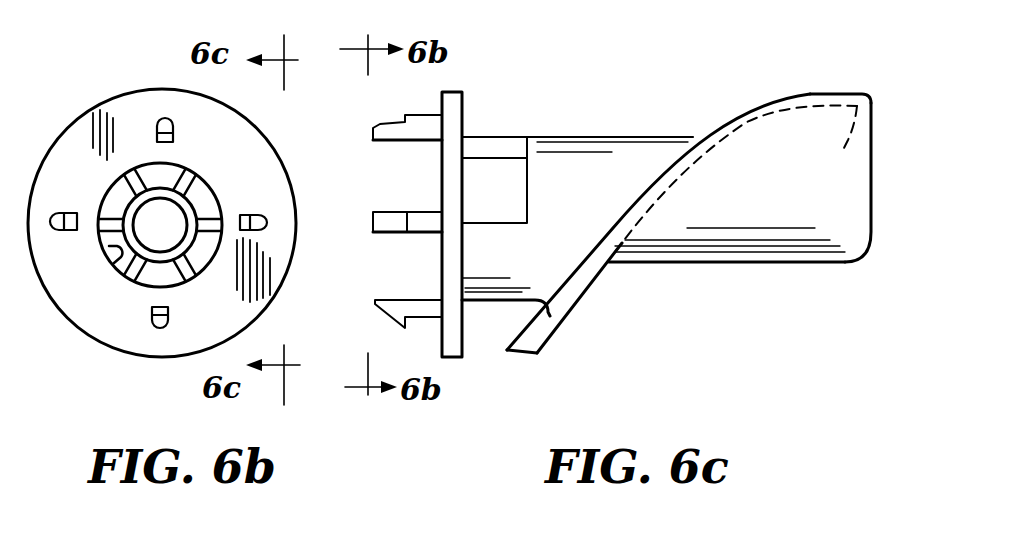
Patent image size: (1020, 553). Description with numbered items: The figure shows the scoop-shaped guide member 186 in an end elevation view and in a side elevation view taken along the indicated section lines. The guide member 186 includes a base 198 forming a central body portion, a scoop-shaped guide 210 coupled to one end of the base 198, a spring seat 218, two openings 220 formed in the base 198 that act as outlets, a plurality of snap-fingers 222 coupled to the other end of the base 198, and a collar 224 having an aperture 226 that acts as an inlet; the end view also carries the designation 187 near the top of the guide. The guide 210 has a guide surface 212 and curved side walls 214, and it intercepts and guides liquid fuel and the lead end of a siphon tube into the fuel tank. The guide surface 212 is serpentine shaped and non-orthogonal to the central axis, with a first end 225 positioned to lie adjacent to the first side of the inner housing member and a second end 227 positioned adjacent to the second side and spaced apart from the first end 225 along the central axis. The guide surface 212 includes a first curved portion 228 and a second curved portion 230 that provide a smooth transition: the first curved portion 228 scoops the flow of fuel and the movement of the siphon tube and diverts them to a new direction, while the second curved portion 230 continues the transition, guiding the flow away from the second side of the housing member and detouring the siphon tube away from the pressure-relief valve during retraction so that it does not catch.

In FIG. 6b, the guide member 186 is at (54, 126).
In FIG. 6c, the grip member 187 is at (661, 85).
In FIG. 6c, the base 198 is at (620, 158).
In FIG. 6c, the scoop-shaped guide 210 is at (771, 152).
In FIG. 6c, the guide surface 212 is at (703, 150).
In FIG. 6c, the curved side walls 214 is at (870, 226).
In FIG. 6b, the spring seat 218 is at (200, 189).
In FIG. 6c, the openings 220 is at (493, 190).
In FIG. 6b, the snap-fingers 222 is at (174, 130).
In FIG. 6c, the snap-fingers 222 is at (397, 127).
In FIG. 6b, the collar 224 is at (118, 332).
In FIG. 6c, the collar 224 is at (458, 108).
In FIG. 6c, the first end 225 is at (831, 136).
In FIG. 6b, the aperture 226 is at (116, 264).
In FIG. 6c, the second end 227 is at (530, 352).
In FIG. 6c, the first curved portion 228 is at (800, 102).
In FIG. 6c, the second curved portion 230 is at (565, 330).